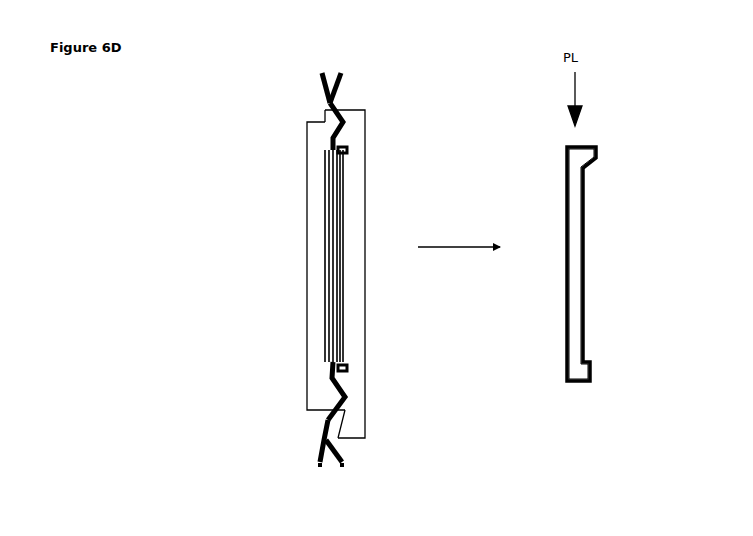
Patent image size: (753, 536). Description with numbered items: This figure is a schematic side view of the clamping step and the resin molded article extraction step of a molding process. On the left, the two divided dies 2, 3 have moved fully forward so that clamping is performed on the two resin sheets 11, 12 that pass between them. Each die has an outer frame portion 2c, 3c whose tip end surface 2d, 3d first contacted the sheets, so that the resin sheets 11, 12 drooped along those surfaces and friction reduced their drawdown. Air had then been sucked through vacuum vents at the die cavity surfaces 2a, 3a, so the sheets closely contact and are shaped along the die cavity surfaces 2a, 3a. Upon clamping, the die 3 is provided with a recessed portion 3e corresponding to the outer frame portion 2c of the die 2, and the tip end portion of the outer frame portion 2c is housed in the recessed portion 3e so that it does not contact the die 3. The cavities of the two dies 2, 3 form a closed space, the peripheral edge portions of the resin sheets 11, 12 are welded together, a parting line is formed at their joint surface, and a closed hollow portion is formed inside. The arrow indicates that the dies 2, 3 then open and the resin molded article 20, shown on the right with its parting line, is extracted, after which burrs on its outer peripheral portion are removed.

The die 2 is at (306, 188).
The die 3 is at (367, 200).
The die cavity surface 2a is at (330, 243).
The die cavity surface 3a is at (340, 285).
The outer frame portion 2c is at (325, 111).
The tip end surface 2d is at (365, 112).
The outer frame portion 3c is at (340, 100).
The tip end surface 3d is at (326, 102).
The recessed portion 3e is at (350, 152).
The resin sheet 11 is at (325, 455).
The resin sheet 12 is at (340, 463).
The resin molded article 20 is at (606, 218).